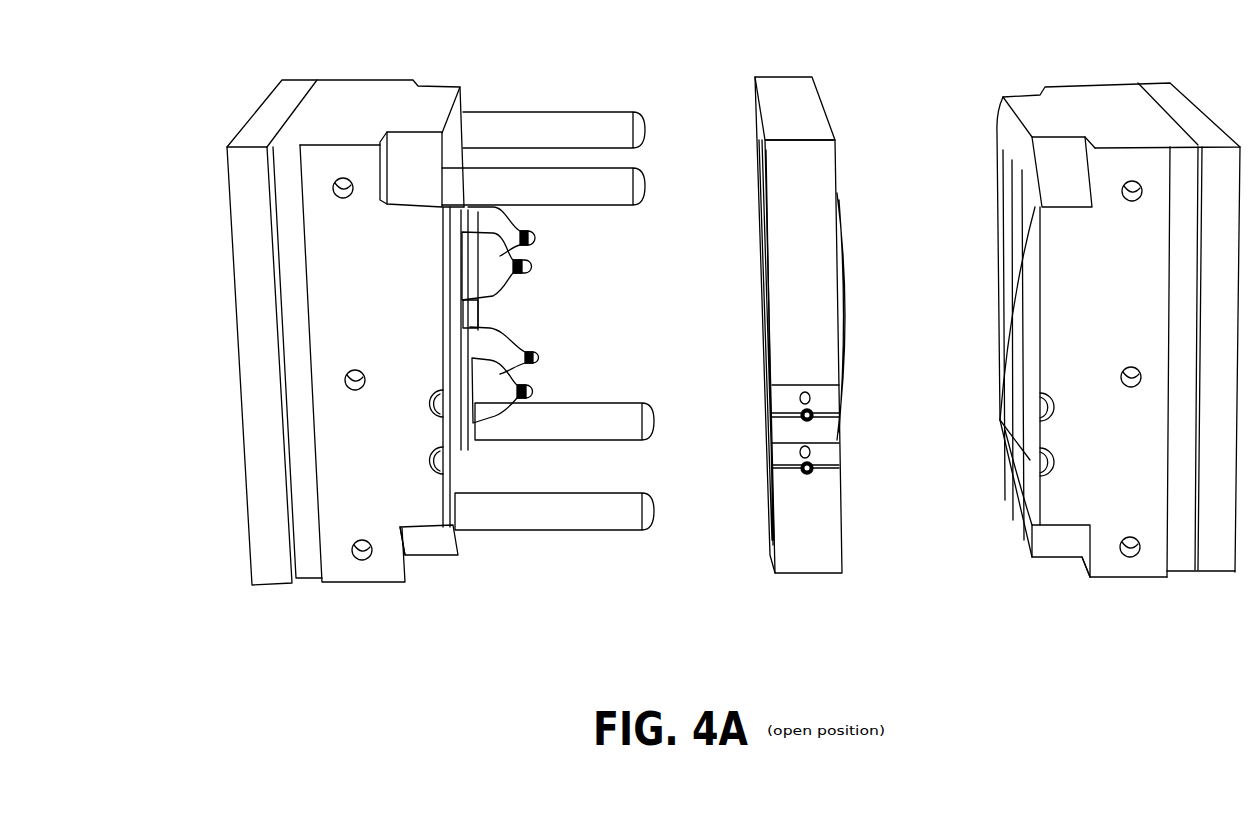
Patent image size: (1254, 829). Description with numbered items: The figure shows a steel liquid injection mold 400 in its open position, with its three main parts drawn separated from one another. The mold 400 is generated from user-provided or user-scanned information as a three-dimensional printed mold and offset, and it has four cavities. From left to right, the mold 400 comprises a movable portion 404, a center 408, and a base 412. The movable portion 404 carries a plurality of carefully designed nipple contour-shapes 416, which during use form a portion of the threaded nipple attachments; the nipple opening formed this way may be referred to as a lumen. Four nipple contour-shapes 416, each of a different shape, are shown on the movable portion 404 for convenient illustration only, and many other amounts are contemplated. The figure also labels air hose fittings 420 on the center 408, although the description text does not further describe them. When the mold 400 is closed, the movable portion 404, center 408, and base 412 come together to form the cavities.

The steel liquid injection mold 400 is at (488, 648).
The movable portion 404 is at (451, 320).
The center 408 is at (848, 310).
The base 412 is at (1118, 317).
The nipple contour-shapes 416 is at (541, 264).
The air hose fittings 420 is at (812, 398).